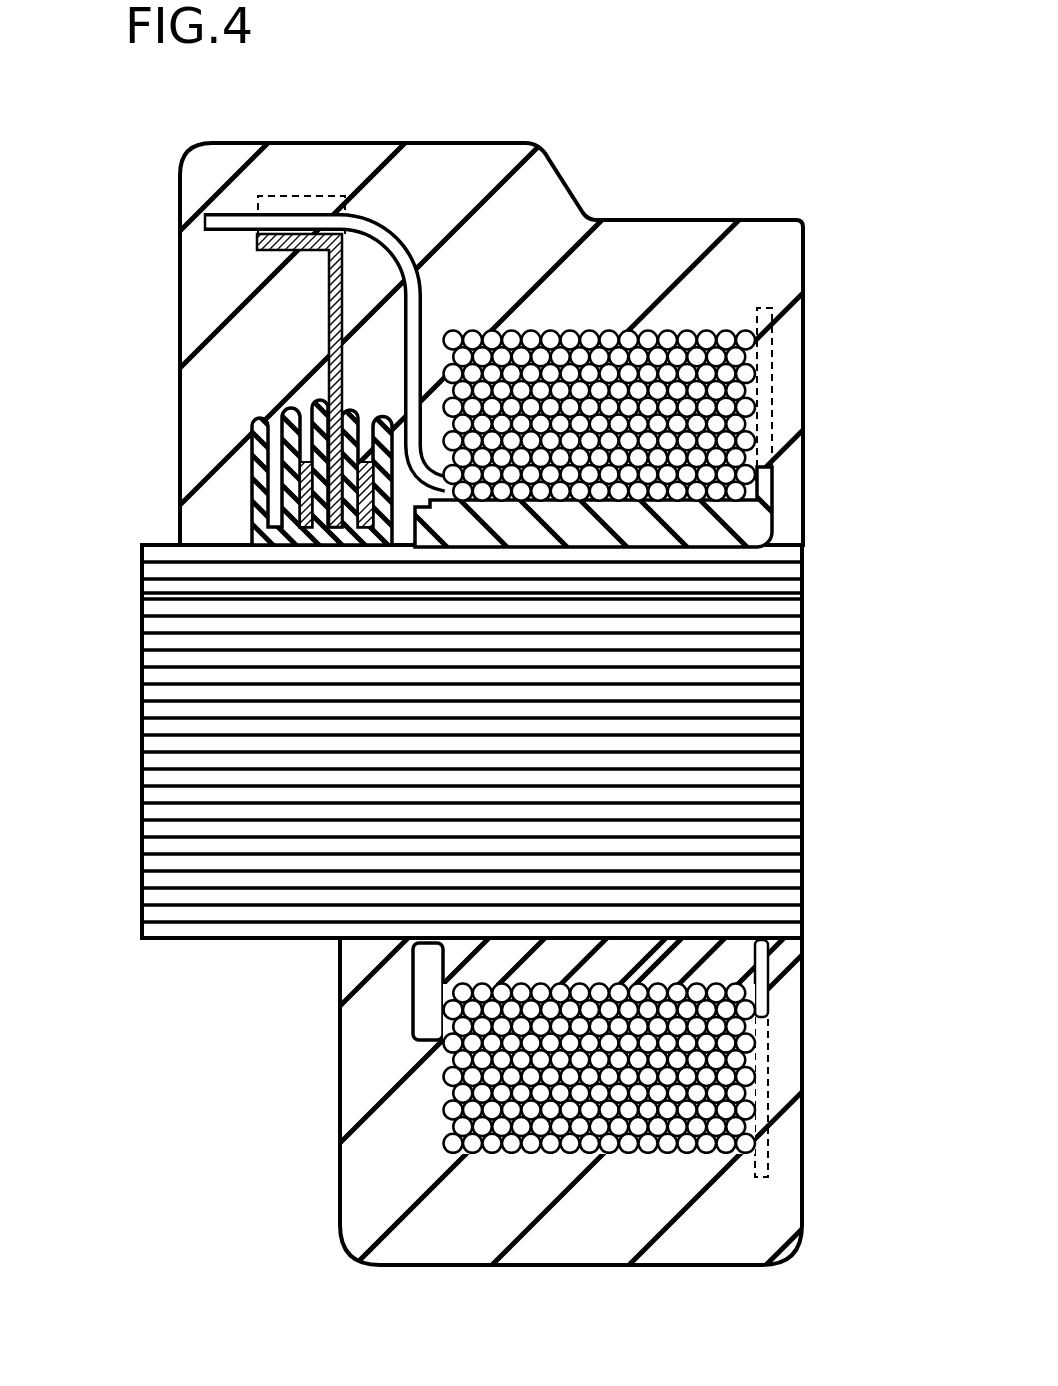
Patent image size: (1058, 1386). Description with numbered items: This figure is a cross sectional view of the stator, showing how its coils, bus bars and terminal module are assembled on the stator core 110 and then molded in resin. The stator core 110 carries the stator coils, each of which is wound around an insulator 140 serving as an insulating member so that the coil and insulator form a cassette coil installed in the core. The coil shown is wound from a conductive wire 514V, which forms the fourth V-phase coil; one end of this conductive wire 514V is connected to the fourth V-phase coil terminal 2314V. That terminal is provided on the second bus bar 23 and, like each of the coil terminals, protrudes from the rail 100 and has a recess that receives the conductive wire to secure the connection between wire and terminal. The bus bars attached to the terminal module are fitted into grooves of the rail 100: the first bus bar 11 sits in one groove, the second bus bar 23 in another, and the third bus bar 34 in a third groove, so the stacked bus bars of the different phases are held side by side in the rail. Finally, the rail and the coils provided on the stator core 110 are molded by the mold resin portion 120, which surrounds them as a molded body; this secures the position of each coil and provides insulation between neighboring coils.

The first bus bar 11 is at (368, 437).
The mold resin portion 120 is at (485, 190).
The conductive wire 514V is at (686, 340).
The fourth V-phase coil terminal 2314V is at (272, 250).
The second bus bar 23 is at (336, 442).
The third bus bar 34 is at (300, 492).
The rail 100 is at (264, 526).
The insulator 140 is at (733, 525).
The stator core 110 is at (790, 724).